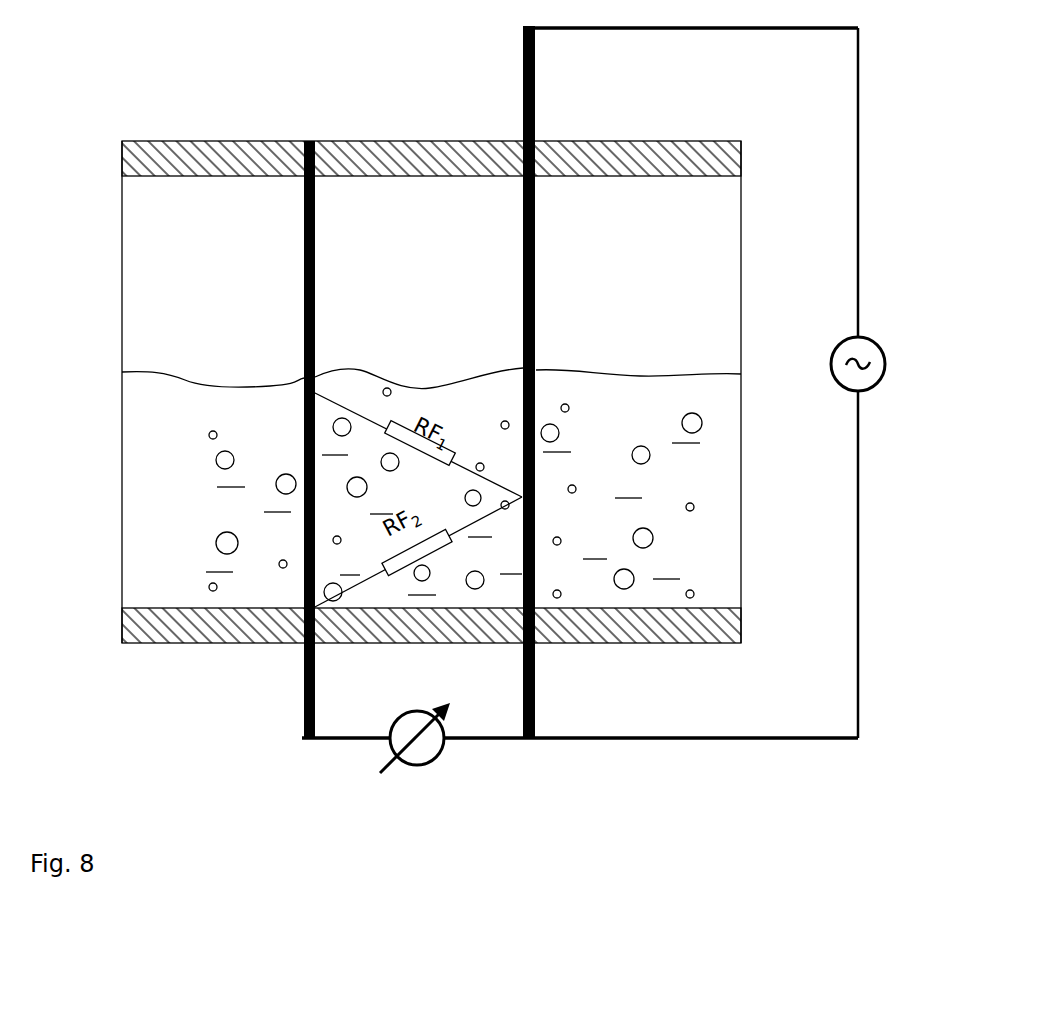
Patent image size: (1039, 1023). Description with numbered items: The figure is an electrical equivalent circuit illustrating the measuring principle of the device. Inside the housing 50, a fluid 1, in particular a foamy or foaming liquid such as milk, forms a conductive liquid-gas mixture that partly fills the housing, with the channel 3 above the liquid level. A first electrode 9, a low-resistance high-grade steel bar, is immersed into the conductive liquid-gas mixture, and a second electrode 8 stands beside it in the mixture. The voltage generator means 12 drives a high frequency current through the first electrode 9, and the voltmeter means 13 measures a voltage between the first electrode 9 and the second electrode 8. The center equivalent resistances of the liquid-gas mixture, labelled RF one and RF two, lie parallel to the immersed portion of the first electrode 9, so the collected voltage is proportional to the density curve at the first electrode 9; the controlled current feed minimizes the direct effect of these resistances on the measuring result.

The housing 50 is at (217, 120).
The second electrode 8 is at (318, 245).
The first electrode 9 is at (519, 227).
The channel 3 is at (148, 330).
The fluid 1 is at (168, 500).
The voltage generator means 12 is at (876, 332).
The voltmeter means 13 is at (425, 751).